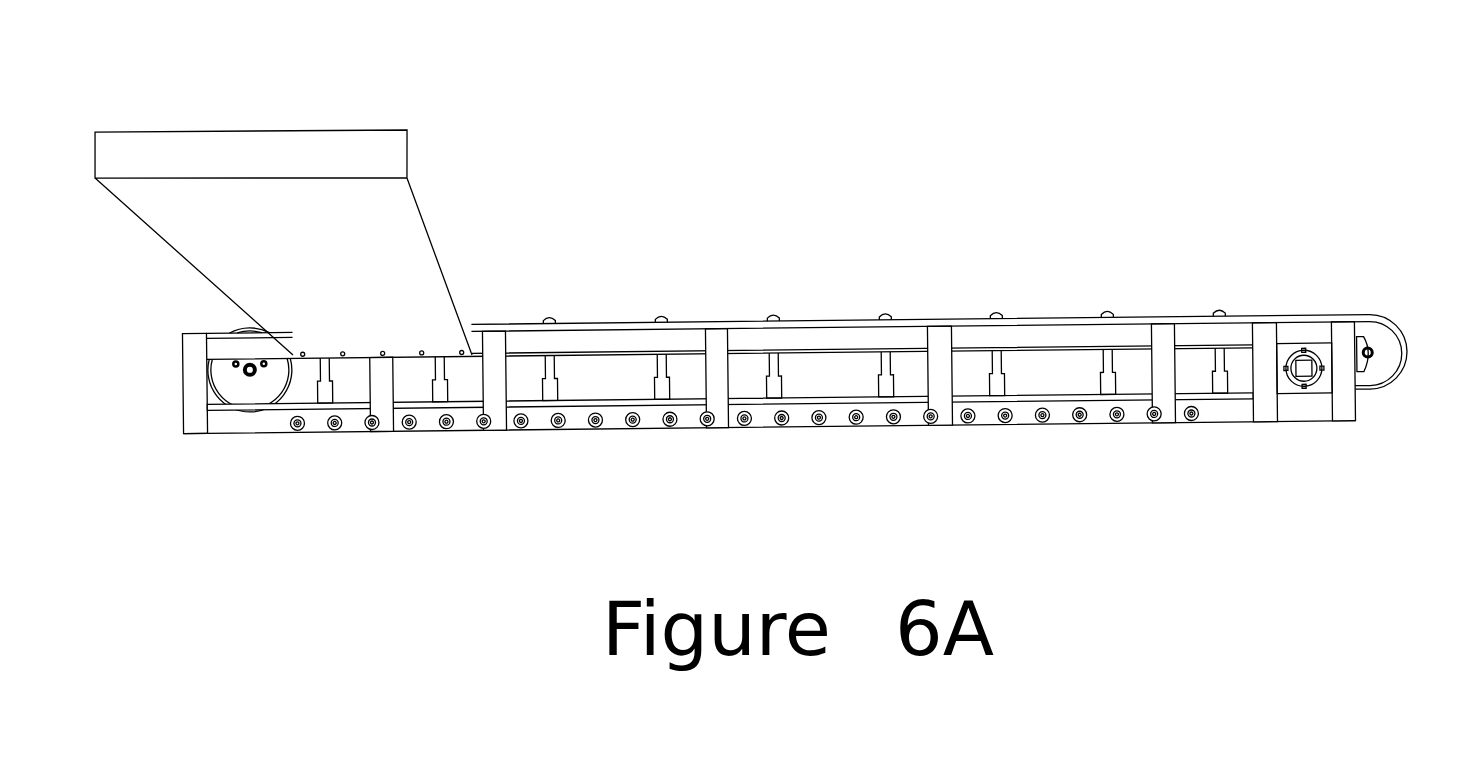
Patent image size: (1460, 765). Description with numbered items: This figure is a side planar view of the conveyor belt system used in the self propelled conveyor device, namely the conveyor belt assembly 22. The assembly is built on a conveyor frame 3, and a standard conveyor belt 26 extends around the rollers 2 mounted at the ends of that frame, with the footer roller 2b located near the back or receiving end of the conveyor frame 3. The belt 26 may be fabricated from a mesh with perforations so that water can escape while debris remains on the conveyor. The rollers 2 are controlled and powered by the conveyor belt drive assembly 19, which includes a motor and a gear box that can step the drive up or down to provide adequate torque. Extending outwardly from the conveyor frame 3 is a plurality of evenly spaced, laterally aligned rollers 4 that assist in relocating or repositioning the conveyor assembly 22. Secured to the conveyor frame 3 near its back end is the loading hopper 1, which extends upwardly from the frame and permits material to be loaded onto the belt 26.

The loading hopper 1 is at (290, 122).
The rollers 2 is at (1369, 318).
The footer roller 2b is at (250, 384).
The conveyor frame 3 is at (714, 346).
The rollers 4 is at (332, 434).
The conveyor belt drive assembly 19 is at (1298, 348).
The conveyor belt assembly 22 is at (1356, 443).
The conveyor belt 26 is at (1064, 323).